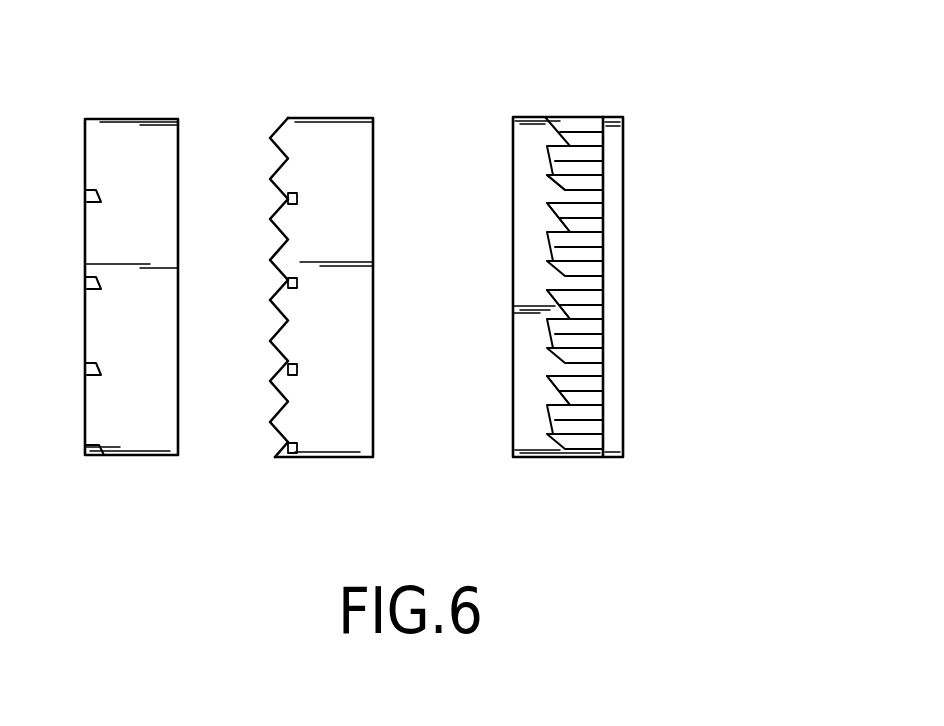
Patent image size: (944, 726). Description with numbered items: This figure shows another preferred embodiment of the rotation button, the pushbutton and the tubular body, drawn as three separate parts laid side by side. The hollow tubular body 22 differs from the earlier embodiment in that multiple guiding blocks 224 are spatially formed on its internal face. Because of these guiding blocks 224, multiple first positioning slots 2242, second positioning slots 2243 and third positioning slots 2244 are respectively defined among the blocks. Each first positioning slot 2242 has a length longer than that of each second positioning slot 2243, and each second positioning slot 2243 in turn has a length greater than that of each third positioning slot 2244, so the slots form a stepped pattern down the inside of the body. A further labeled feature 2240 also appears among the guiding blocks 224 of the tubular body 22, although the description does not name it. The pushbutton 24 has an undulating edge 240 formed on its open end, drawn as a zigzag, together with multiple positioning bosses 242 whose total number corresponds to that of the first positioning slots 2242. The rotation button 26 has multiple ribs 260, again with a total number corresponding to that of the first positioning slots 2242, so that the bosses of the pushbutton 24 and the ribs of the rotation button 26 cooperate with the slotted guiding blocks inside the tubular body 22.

The hollow tubular body 22 is at (613, 117).
The guiding block 224 is at (564, 117).
The fin 2240 is at (593, 210).
The first positioning slot 2242 is at (597, 283).
The second positioning slot 2243 is at (557, 393).
The third positioning slot 2244 is at (555, 173).
The pushbutton 24 is at (342, 118).
The undulating edge 240 is at (277, 403).
The positioning boss 242 is at (297, 462).
The rotation button 26 is at (135, 118).
The rib 260 is at (93, 458).